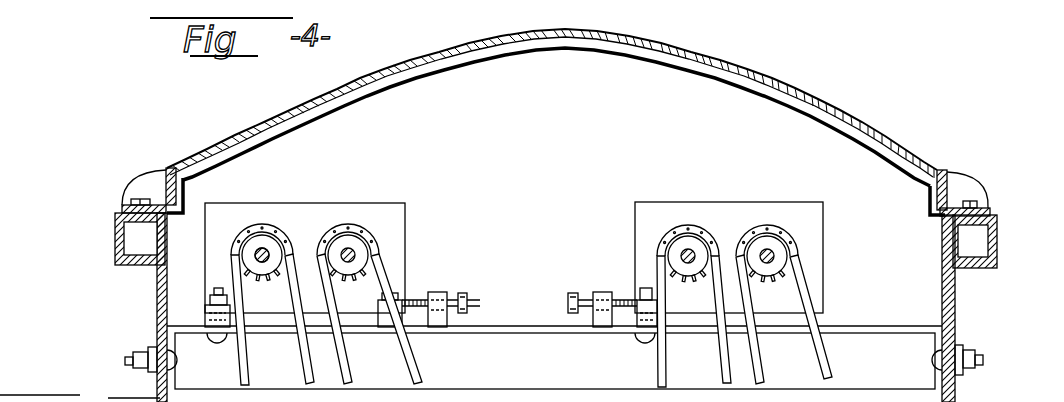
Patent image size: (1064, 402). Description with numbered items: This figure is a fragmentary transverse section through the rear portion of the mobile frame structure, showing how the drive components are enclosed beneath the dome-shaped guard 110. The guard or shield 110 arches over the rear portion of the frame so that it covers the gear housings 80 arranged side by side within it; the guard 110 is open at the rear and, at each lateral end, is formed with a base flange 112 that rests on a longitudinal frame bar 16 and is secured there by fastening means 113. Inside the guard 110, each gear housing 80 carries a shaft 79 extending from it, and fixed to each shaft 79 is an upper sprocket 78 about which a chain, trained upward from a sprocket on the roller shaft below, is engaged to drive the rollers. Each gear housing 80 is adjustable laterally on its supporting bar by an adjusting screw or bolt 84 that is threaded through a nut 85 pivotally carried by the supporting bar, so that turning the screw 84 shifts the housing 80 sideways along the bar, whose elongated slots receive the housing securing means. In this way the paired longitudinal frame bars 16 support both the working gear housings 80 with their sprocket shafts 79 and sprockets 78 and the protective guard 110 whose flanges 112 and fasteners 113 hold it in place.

The longitudinal frame bar 16 is at (125, 236).
The upper sprocket 78 is at (258, 238).
The shaft 79 is at (265, 252).
The gear housing 80 is at (408, 222).
The adjusting screw 84 is at (568, 297).
The nut 85 is at (440, 292).
The dome-shaped guard 110 is at (902, 152).
The base flange 112 is at (950, 205).
The fastening means 113 is at (972, 204).